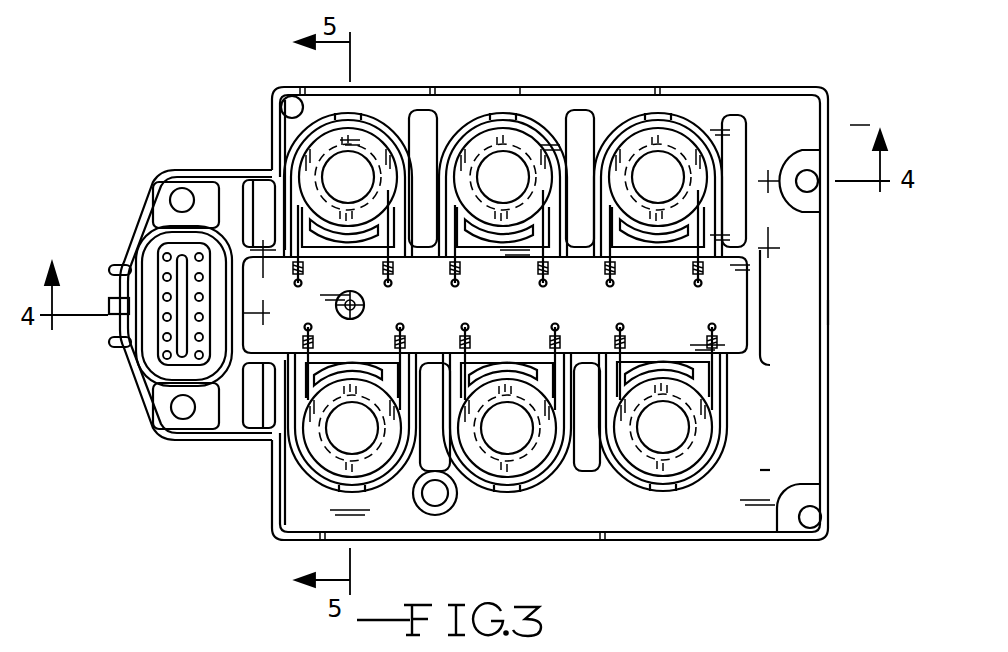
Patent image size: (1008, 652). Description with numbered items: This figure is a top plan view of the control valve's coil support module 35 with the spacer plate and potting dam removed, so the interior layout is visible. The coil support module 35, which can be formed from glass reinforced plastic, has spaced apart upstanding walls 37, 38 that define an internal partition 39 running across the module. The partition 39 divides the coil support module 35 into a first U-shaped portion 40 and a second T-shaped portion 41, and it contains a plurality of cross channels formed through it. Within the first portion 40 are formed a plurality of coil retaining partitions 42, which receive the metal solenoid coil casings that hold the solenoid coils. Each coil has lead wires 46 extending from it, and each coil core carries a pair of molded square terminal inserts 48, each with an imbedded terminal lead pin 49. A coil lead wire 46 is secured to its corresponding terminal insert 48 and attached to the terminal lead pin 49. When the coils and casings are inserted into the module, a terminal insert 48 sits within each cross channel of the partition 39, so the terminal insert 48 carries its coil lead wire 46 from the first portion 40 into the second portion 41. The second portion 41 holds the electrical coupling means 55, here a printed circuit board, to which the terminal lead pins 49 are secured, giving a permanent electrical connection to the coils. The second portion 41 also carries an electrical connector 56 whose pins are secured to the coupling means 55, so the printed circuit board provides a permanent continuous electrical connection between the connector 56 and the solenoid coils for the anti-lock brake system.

The coil support module 35 is at (828, 410).
The upstanding wall 37 is at (574, 250).
The upstanding wall 38 is at (263, 372).
The internal partition 39 is at (827, 312).
The first U-shaped portion 40 is at (792, 455).
The second T-shaped portion 41 is at (676, 337).
The coil retaining partition 42 is at (462, 123).
The lead wire 46 is at (687, 250).
The terminal insert 48 is at (611, 257).
The terminal lead pin 49 is at (607, 282).
The electrical coupling means 55 is at (258, 262).
The electrical connector 56 is at (142, 248).